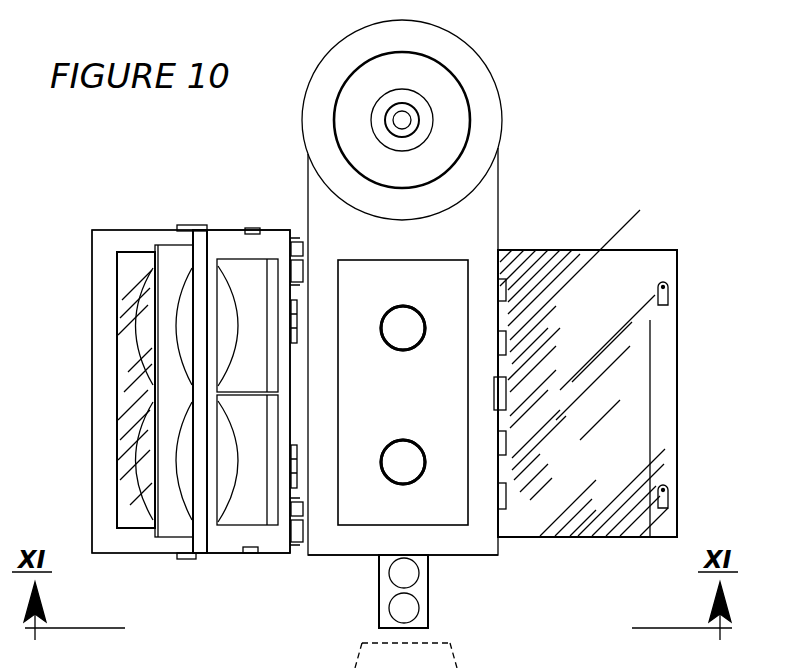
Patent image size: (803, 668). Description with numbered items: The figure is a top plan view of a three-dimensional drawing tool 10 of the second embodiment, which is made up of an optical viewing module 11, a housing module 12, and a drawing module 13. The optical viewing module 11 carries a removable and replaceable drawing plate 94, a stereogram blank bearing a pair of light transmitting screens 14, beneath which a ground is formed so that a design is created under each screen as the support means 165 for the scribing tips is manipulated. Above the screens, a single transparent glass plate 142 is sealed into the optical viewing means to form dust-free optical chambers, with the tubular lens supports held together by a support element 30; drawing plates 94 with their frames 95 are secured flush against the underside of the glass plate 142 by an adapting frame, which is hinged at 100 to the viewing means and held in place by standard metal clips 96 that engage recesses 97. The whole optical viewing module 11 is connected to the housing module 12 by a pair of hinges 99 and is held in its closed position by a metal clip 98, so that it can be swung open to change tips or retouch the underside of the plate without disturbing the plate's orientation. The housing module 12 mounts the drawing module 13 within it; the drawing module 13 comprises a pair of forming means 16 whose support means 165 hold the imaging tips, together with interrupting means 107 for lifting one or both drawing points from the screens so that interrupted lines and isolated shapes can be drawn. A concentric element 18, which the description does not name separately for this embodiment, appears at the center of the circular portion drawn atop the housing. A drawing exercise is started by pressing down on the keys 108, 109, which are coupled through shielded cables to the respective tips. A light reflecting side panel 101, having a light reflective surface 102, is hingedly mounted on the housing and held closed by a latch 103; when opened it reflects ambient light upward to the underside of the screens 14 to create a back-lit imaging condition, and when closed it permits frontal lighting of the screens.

The three-dimensional drawing tool 10 is at (612, 152).
The optical viewing module 11 is at (176, 204).
The housing module 12 is at (503, 205).
The drawing module 13 is at (448, 126).
The light transmitting screens 14 is at (188, 432).
The forming means 16 is at (400, 332).
The reel hub 18 is at (420, 108).
The support element 30 is at (100, 445).
The drawing plate 94 is at (152, 244).
The frame 95 is at (168, 538).
The metal clips 96 is at (198, 226).
The recesses 97 is at (262, 222).
The metal clip 98 is at (508, 398).
The hinges 99 is at (312, 243).
The hinge 100 is at (300, 312).
The side panel 101 is at (563, 538).
The light reflective surface 102 is at (655, 538).
The latch 103 is at (670, 493).
The interrupting means 107 is at (442, 592).
The key 108 is at (396, 574).
The key 109 is at (396, 608).
The transparent glass plate 142 is at (130, 400).
The support means 165 is at (422, 352).